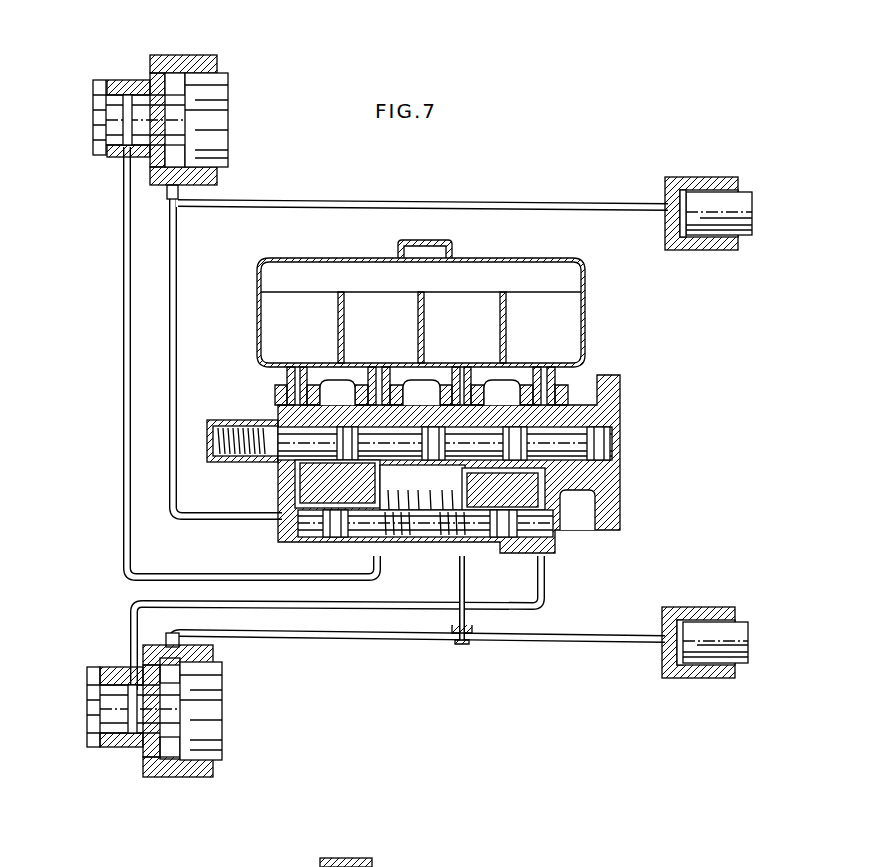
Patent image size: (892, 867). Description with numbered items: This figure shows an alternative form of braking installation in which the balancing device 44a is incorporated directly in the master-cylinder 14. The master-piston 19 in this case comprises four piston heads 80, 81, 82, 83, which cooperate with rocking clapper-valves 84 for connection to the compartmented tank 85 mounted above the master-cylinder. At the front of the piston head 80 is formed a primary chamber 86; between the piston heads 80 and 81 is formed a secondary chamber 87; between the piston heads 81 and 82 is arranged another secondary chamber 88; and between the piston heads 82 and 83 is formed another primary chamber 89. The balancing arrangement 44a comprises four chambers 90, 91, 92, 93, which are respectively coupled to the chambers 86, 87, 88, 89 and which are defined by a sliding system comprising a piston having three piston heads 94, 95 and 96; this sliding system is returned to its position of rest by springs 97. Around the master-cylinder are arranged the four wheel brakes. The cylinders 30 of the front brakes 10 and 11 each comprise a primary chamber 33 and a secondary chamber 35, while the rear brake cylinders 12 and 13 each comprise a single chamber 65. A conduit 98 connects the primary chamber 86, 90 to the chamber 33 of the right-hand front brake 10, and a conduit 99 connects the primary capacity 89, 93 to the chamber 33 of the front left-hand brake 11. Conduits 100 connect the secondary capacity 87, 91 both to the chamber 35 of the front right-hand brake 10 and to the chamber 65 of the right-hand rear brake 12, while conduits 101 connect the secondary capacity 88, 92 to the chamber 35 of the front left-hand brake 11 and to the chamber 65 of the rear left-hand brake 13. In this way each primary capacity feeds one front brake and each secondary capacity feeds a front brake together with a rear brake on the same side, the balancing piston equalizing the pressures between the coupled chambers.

The right-hand front brake 10 is at (164, 413).
The left-hand front brake 11 is at (181, 779).
The right-hand rear brake 12 is at (710, 177).
The left-hand rear brake 13 is at (706, 607).
The master-cylinder 14 is at (445, 480).
The master-piston 19 is at (617, 462).
The cylinder 30 is at (158, 186).
The primary chamber 33 is at (128, 98).
The secondary chamber 35 is at (173, 78).
The balancing device 44a is at (562, 546).
The chamber 65 is at (683, 200).
The piston head 80 is at (347, 440).
The piston head 81 is at (432, 440).
The piston head 82 is at (514, 440).
The piston head 83 is at (600, 437).
The rocking clapper-valves 84 is at (285, 390).
The compartmented tank 85 is at (257, 326).
The primary chamber 86 is at (322, 462).
The secondary chamber 87 is at (403, 462).
The secondary chamber 88 is at (487, 466).
The primary chamber 89 is at (574, 480).
The chamber 90 is at (300, 524).
The chamber 91 is at (389, 558).
The chamber 92 is at (452, 560).
The chamber 93 is at (536, 566).
The piston head 94 is at (322, 522).
The piston head 95 is at (421, 548).
The piston head 96 is at (513, 547).
The springs 97 is at (357, 541).
The conduit 98 is at (123, 345).
The conduit 99 is at (128, 604).
The conduits 100 is at (179, 210).
The conduits 101 is at (456, 623).